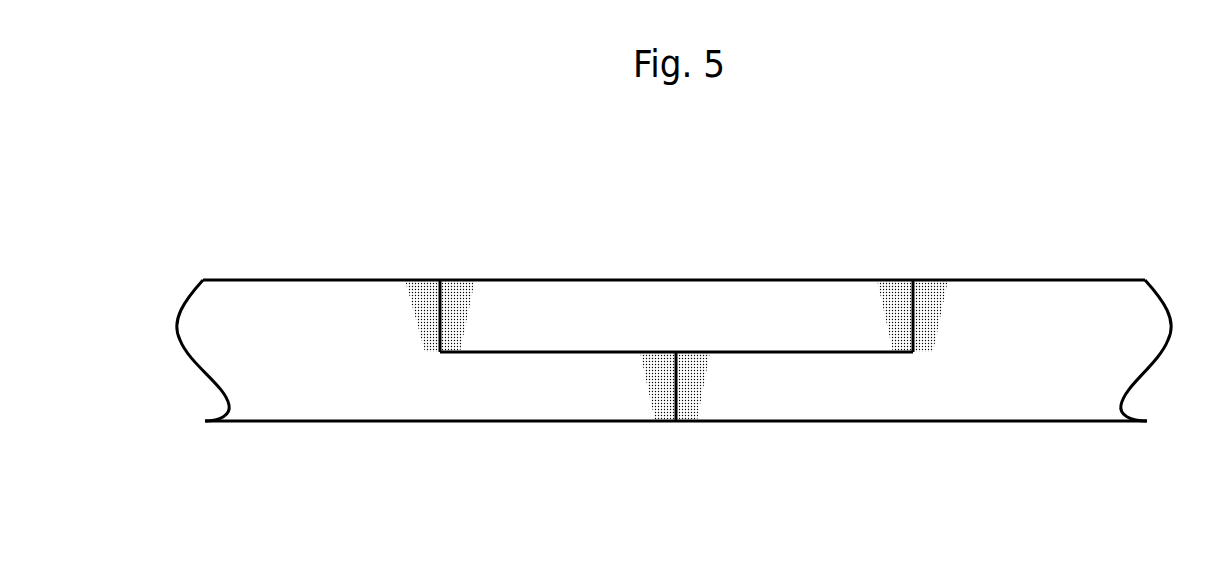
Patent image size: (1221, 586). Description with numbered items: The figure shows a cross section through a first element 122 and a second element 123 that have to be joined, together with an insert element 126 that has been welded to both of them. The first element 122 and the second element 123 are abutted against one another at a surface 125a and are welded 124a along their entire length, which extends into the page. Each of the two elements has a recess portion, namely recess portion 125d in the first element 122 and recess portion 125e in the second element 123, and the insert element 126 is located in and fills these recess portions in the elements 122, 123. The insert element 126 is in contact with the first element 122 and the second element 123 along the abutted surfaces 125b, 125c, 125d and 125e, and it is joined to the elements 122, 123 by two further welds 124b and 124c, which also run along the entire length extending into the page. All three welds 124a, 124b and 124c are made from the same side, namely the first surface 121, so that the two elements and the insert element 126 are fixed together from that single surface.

The first surface 121 is at (269, 222).
The first element 122 is at (320, 388).
The second element 123 is at (1142, 300).
The weld 124a is at (660, 388).
The weld 124b is at (448, 288).
The weld 124c is at (935, 290).
The abutted surface 125a is at (680, 385).
The abutted surface 125b is at (437, 288).
The abutted surface 125c is at (905, 287).
The recess portion 125d is at (558, 353).
The recess portion 125e is at (830, 352).
The insert element 126 is at (695, 298).